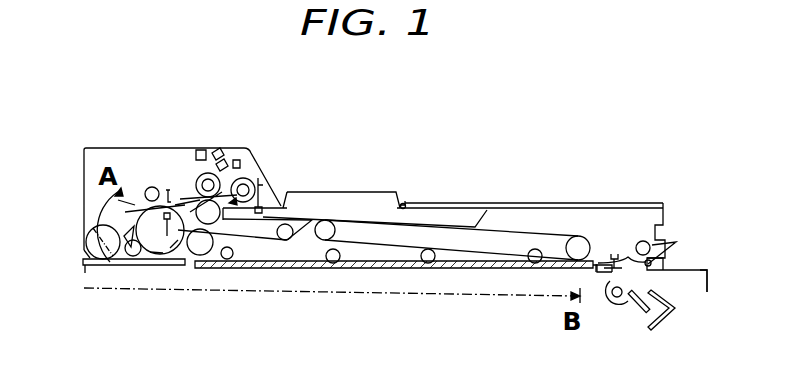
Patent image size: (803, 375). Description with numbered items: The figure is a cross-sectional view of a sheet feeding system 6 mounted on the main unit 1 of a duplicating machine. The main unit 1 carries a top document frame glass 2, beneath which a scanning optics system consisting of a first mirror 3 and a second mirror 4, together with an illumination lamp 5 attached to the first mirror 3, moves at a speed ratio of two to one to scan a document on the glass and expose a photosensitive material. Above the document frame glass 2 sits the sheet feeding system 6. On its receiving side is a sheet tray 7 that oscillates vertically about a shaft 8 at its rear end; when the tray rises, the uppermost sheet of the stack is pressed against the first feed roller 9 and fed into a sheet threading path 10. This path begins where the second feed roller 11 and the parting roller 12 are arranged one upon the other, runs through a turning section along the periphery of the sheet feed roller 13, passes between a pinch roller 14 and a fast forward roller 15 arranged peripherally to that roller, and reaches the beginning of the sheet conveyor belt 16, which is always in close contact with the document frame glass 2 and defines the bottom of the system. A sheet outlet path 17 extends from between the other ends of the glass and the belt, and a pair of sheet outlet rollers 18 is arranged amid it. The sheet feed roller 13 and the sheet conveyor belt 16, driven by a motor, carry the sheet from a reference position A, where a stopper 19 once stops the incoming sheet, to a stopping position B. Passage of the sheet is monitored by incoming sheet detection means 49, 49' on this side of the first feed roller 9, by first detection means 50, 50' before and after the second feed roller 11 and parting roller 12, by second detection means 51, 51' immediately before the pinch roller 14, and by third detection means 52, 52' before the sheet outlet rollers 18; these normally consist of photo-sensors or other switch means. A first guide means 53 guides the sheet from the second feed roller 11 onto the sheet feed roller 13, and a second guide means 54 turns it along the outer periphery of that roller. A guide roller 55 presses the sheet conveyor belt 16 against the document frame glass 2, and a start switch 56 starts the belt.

The main unit 1 is at (709, 288).
The document frame glass 2 is at (379, 268).
The first mirror 3 is at (637, 304).
The second mirror 4 is at (663, 318).
The illumination lamp 5 is at (612, 300).
The sheet feeding system 6 is at (84, 153).
The sheet tray 7 is at (290, 193).
The shaft 8 is at (404, 203).
The first feed roller 9 is at (250, 175).
The sheet threading path 10 is at (172, 198).
The second feed roller 11 is at (205, 172).
The parting roller 12 is at (209, 224).
The sheet feed roller 13 is at (143, 243).
The pinch roller 14 is at (138, 214).
The fast forward roller 15 is at (112, 268).
The sheet conveyor belt 16 is at (250, 238).
The sheet outlet path 17 is at (610, 268).
The sheet outlet rollers 18 is at (657, 247).
The stopper 19 is at (130, 199).
The incoming sheet detection means 49 is at (266, 177).
The incoming sheet detection means 49' is at (375, 188).
The first detection means 50 is at (245, 156).
The first detection means 50' is at (190, 284).
The second detection means 51 is at (138, 155).
The second detection means 51' is at (156, 290).
The third detection means 52 is at (619, 211).
The third detection means 52' is at (592, 222).
The first guide means 53 is at (176, 198).
The second guide means 54 is at (124, 227).
The guide roller 55 is at (334, 263).
The start switch 56 is at (221, 162).